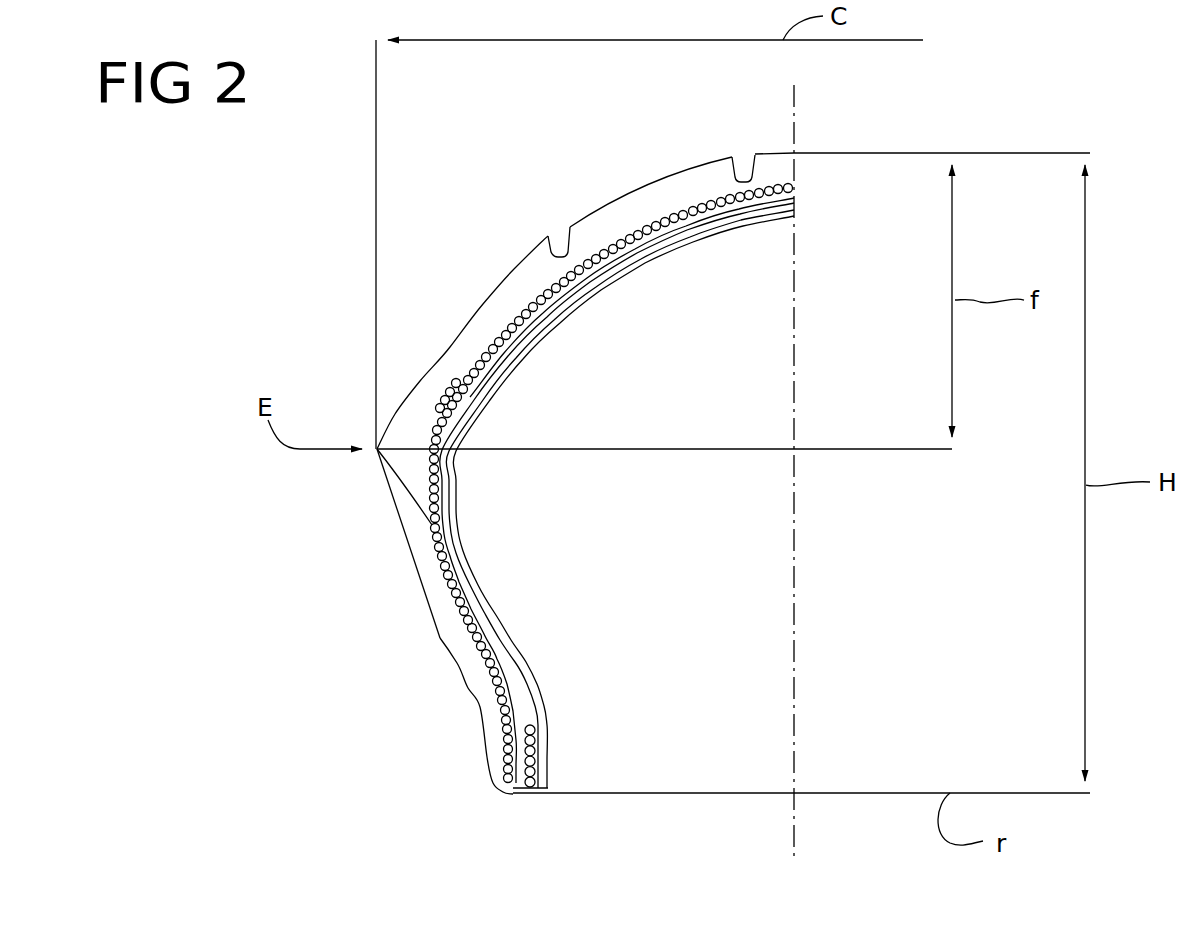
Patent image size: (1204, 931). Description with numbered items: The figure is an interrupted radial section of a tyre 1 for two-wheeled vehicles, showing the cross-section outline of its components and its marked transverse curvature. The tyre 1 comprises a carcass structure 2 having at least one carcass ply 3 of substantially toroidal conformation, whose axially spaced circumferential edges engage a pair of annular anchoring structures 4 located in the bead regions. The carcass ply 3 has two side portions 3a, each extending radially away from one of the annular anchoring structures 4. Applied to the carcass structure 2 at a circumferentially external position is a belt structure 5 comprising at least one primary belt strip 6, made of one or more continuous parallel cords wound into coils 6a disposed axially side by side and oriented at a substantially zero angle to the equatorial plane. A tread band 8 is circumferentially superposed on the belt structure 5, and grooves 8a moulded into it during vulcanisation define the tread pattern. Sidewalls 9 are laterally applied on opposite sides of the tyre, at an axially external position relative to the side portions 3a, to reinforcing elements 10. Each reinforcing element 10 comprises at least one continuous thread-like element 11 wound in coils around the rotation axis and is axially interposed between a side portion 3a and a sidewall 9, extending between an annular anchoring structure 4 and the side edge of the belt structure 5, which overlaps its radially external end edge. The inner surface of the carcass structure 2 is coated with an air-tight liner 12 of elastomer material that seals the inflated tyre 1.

The tyre 1 is at (342, 332).
The carcass structure 2 is at (699, 251).
The carcass ply 3 is at (624, 263).
The side portions 3a is at (490, 623).
The annular anchoring structures 4 is at (496, 757).
The belt structure 5 is at (600, 228).
The primary belt strip 6 is at (635, 216).
The coils 6a is at (517, 320).
The tread band 8 is at (695, 183).
The grooves 8a is at (742, 162).
The sidewalls 9 is at (442, 622).
The reinforcing elements 10 is at (433, 560).
The continuous thread-like element 11 is at (430, 528).
The liner 12 is at (575, 318).